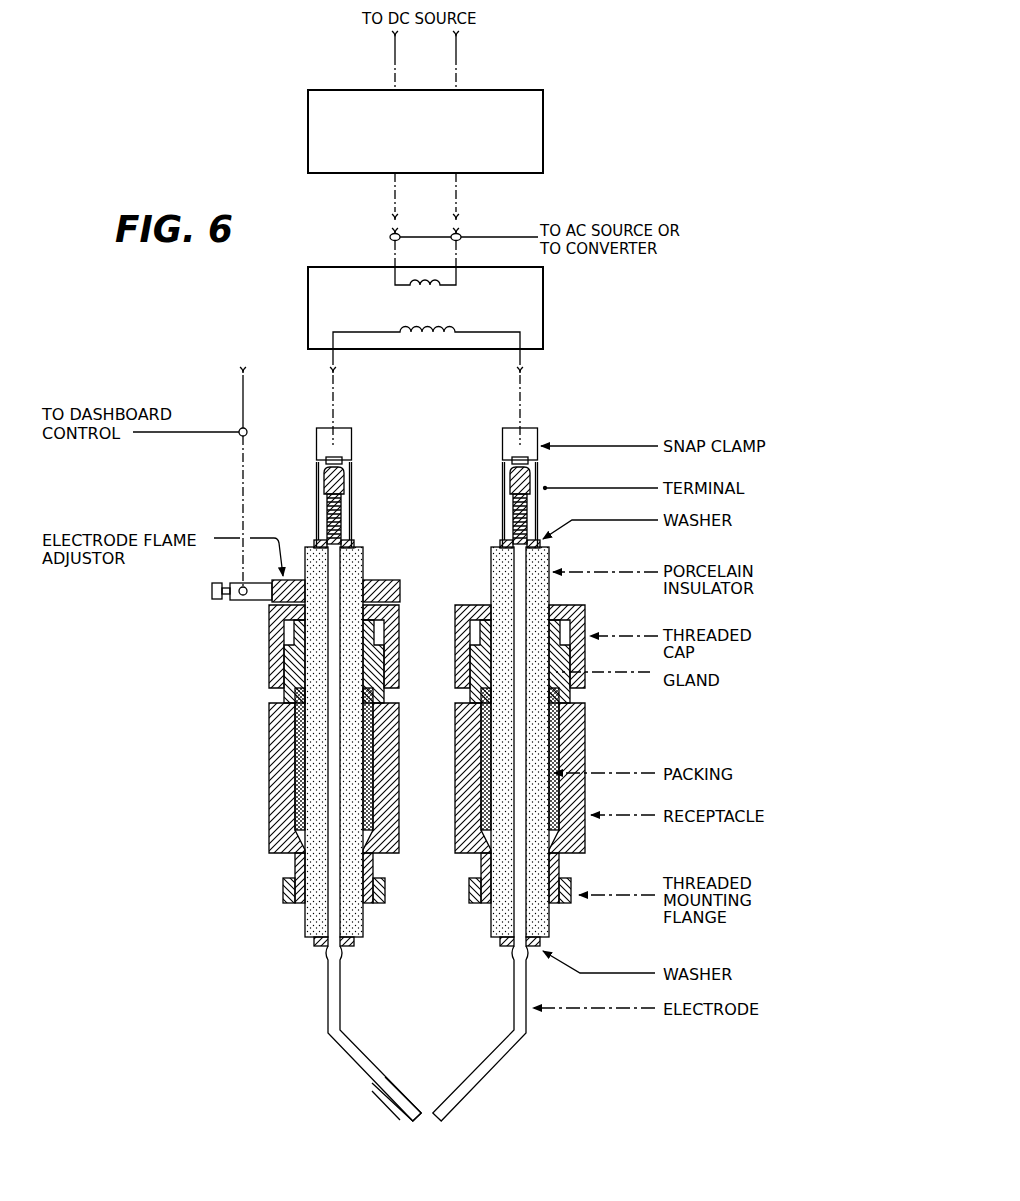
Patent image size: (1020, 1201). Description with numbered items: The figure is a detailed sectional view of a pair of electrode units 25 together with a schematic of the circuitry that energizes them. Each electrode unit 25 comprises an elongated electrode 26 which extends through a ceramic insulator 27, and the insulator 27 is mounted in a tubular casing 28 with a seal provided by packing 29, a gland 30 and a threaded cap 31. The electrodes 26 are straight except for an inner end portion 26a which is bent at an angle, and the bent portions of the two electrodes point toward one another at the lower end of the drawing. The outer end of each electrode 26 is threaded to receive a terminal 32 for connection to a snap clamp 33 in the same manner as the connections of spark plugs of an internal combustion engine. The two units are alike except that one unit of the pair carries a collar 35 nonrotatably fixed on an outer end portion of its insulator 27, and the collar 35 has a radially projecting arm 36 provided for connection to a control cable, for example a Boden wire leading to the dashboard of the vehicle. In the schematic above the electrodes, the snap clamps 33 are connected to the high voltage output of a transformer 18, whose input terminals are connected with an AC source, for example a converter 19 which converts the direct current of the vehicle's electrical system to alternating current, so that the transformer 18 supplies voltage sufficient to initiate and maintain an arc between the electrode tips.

The transformer 18 is at (543, 311).
The converter 19 is at (543, 130).
The electrode unit 25 is at (268, 769).
The electrode 26 is at (327, 992).
The inner end portion 26a is at (372, 1086).
The ceramic insulator 27 is at (306, 912).
The tubular casing 28 is at (272, 821).
The packing 29 is at (300, 736).
The gland 30 is at (300, 666).
The threaded cap 31 is at (283, 617).
The terminal 32 is at (345, 490).
The snap clamp 33 is at (352, 448).
The collar 35 is at (365, 581).
The radially projecting arm 36 is at (236, 601).